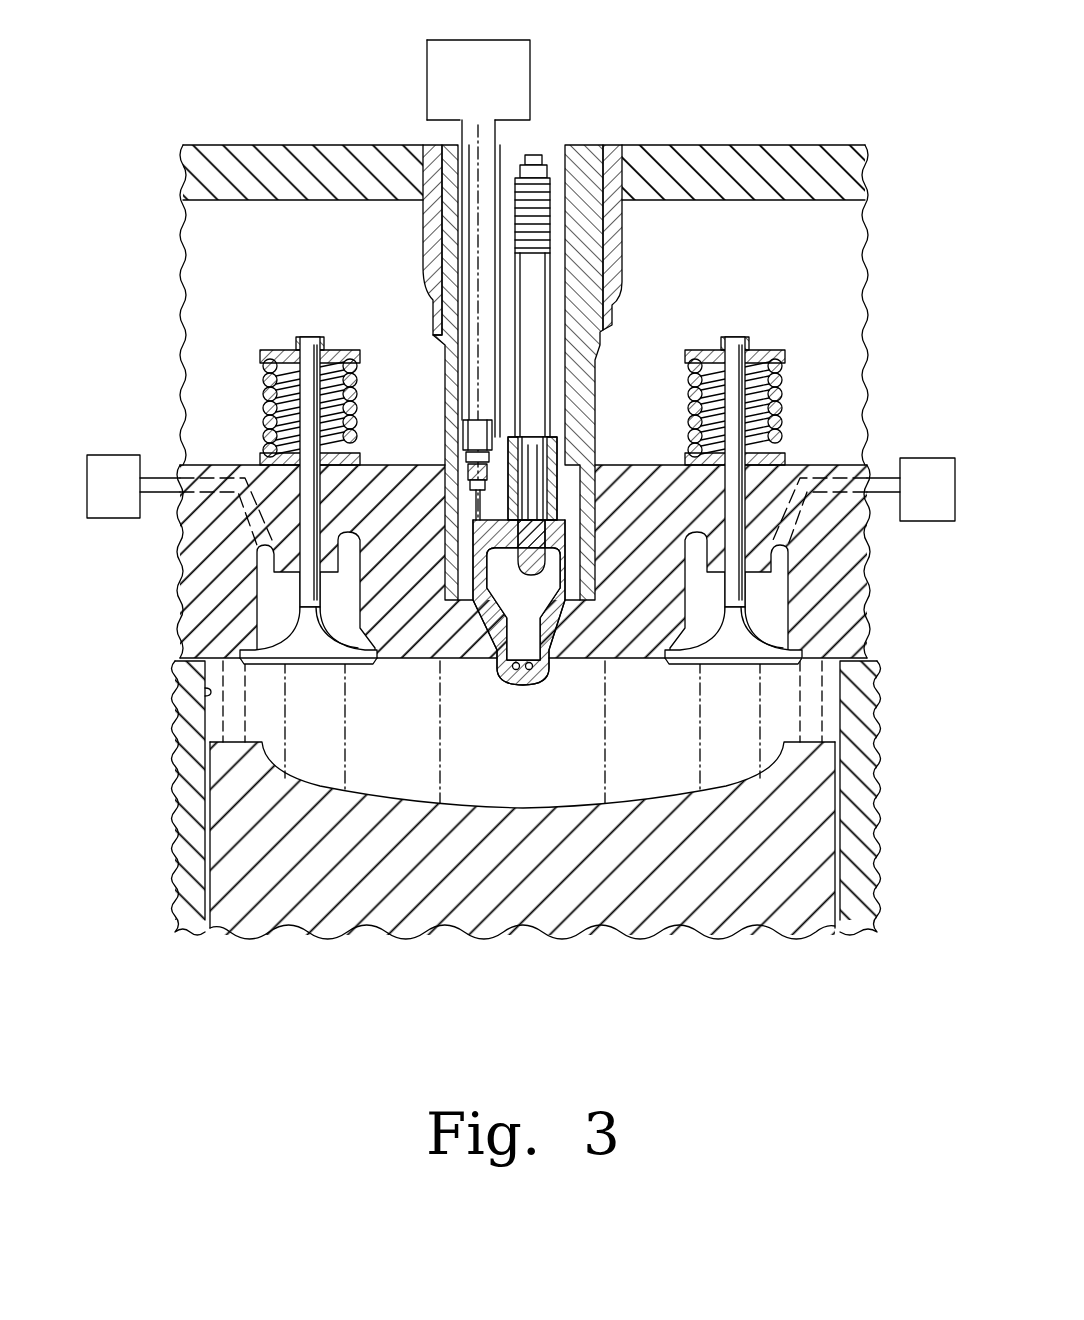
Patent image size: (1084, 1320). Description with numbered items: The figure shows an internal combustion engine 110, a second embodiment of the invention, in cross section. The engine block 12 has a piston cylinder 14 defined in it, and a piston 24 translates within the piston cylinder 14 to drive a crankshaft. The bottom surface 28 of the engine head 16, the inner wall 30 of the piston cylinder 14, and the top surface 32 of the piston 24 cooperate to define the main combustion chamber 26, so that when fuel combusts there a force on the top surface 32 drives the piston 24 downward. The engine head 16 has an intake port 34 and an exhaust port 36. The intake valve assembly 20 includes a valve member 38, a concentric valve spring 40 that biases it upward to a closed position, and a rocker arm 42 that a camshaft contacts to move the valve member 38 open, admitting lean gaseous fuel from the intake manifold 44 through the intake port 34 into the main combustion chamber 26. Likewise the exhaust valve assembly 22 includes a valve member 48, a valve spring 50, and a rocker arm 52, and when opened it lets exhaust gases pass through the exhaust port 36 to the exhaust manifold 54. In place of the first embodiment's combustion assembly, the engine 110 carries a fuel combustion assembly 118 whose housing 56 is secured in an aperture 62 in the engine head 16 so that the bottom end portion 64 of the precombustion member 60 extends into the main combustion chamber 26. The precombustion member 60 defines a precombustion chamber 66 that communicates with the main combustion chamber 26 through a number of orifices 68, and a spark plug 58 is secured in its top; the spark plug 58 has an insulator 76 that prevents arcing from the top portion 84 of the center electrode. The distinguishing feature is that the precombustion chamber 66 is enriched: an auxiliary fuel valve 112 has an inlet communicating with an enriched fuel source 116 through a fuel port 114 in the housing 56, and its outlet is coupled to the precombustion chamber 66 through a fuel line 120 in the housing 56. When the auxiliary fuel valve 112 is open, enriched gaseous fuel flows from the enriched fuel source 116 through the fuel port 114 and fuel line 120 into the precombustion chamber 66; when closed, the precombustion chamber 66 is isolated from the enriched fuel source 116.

The internal combustion engine 110 is at (801, 89).
The enriched fuel source 116 is at (530, 60).
The top portion of the center electrode 84 is at (510, 329).
The fuel port 114 is at (458, 184).
The insulator 76 is at (528, 299).
The fuel combustion assembly 118 is at (625, 267).
The housing 56 is at (622, 284).
The intake valve assembly 20 is at (331, 497).
The exhaust valve assembly 22 is at (757, 499).
The rocker arm 42 is at (360, 357).
The rocker arm 52 is at (785, 357).
The auxiliary fuel valve 112 is at (468, 438).
The valve spring 40 is at (355, 412).
The valve spring 50 is at (780, 408).
The fuel line 120 is at (470, 505).
The exhaust manifold 54 is at (930, 460).
The intake manifold 44 is at (112, 520).
The engine head 16 is at (516, 561).
The intake port 34 is at (262, 612).
The exhaust port 36 is at (788, 624).
The inner wall of the piston cylinder 30 is at (205, 692).
The valve member 38 is at (312, 652).
The aperture 62 is at (440, 660).
The precombustion chamber 66 is at (500, 660).
The bottom end portion 64 is at (525, 686).
The orifices 68 is at (542, 690).
The precombustion member 60 is at (517, 632).
The bottom surface of the engine head 28 is at (640, 662).
The valve member 48 is at (725, 663).
The piston cylinder 14 is at (843, 690).
The engine block 12 is at (527, 798).
The main combustion chamber 26 is at (522, 775).
The top surface of the piston 32 is at (575, 806).
The piston 24 is at (522, 840).
The spark plug 58 is at (524, 411).